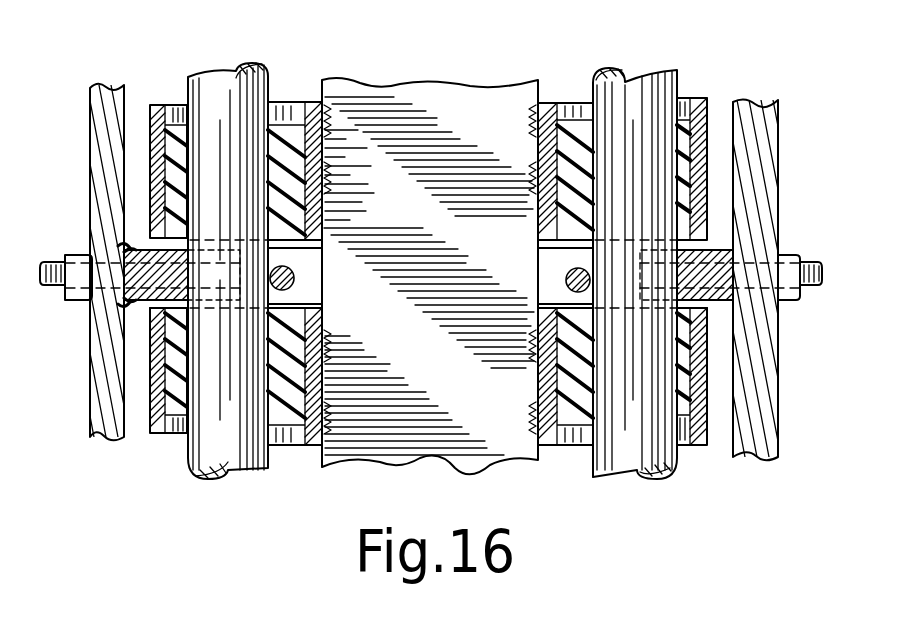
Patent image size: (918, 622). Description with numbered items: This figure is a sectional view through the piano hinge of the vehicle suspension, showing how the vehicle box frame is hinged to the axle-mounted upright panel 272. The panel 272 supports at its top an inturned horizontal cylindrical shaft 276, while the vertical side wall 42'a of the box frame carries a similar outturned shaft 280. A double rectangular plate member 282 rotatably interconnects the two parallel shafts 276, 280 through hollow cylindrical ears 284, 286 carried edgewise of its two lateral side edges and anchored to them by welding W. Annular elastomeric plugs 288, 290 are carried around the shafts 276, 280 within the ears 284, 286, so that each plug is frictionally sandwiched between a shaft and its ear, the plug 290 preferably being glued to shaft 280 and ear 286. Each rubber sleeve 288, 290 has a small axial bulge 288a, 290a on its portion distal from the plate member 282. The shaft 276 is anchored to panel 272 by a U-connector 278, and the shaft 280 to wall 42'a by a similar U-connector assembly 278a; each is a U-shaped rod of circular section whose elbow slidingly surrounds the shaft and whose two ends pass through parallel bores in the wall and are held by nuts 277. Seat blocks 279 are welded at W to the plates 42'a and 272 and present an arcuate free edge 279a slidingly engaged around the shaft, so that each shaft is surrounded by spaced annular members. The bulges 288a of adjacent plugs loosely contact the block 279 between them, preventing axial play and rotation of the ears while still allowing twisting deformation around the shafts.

The vertical side wall 42'a is at (108, 233).
The hollow cylindrical ear 284 is at (155, 105).
The shaft 280 is at (215, 100).
The annular elastomeric plug 288 is at (290, 125).
The double rectangular plate member 282 is at (440, 100).
The annular elastomeric plug 290 is at (570, 125).
The cylindrical shaft 276 is at (627, 110).
The hollow cylindrical ear 286 is at (698, 105).
The upright panel 272 is at (757, 115).
The U-connector 278 is at (712, 252).
The arcuate free edge 279a is at (660, 240).
The nut 277 is at (78, 250).
The seat block 279 is at (715, 300).
The U-connector assembly 278a is at (125, 302).
The axial bulge 288a is at (150, 308).
The axial bulge 290a is at (700, 308).
The welding W is at (337, 127).